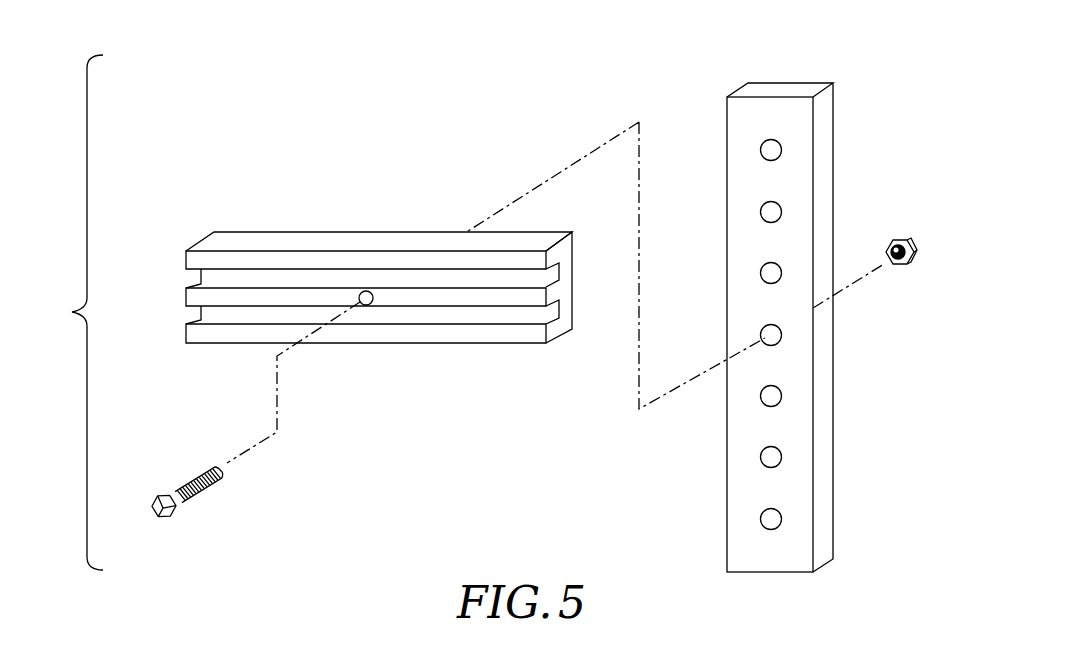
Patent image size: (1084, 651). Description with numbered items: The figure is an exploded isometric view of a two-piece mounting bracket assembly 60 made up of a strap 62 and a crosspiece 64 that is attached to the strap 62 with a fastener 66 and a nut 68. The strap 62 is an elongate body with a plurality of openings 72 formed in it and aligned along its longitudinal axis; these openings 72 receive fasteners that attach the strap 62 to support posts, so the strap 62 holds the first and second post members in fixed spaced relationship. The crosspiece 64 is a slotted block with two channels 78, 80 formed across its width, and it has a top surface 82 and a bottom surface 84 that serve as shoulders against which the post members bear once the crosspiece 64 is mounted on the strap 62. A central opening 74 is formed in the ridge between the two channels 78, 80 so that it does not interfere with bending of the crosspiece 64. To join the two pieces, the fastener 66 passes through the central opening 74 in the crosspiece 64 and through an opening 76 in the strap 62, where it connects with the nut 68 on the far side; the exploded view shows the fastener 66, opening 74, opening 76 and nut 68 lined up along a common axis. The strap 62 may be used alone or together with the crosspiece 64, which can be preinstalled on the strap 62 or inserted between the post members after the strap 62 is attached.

The mounting bracket assembly 60 is at (345, 158).
The strap 62 is at (791, 327).
The crosspiece 64 is at (385, 282).
The fastener 66 is at (203, 487).
The nut 68 is at (900, 235).
The openings 72 is at (766, 206).
The central opening 74 is at (369, 308).
The opening 76 is at (777, 342).
The channel 78 is at (468, 282).
The channel 80 is at (457, 313).
The top surface 82 is at (507, 247).
The bottom surface 84 is at (560, 338).